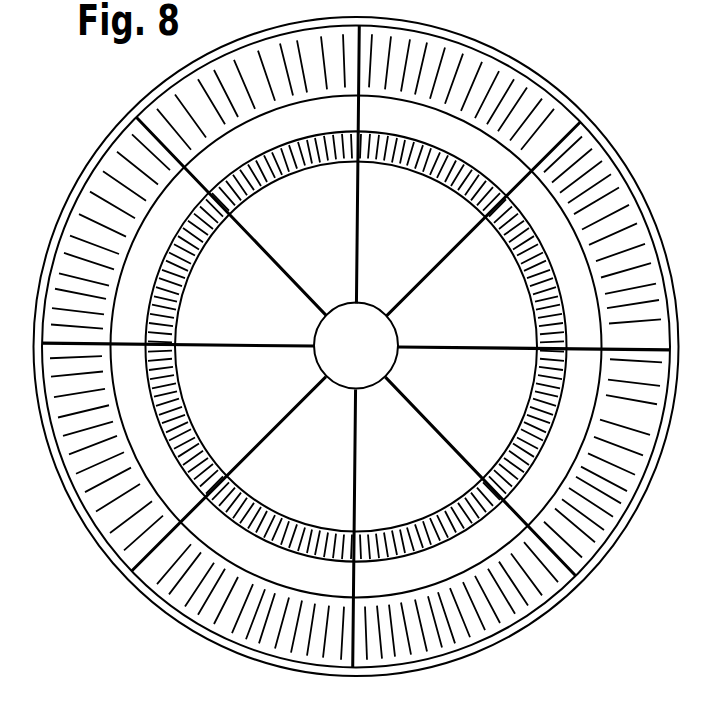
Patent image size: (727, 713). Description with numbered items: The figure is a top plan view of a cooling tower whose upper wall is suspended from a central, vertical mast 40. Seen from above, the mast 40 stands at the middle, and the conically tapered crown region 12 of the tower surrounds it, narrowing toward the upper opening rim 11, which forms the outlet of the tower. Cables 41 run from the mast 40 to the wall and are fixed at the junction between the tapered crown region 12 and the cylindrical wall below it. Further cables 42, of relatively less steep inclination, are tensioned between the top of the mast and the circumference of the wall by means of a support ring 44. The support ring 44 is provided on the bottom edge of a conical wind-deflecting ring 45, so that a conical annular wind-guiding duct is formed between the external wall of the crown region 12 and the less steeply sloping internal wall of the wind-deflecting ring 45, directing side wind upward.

The central vertical mast 40 is at (367, 342).
The cables 41 is at (356, 346).
The cables 42 is at (270, 262).
The support ring 44 is at (112, 560).
The conical wind-deflecting ring 45 is at (510, 76).
The upper opening rim 11 is at (253, 500).
The crown region 12 is at (308, 536).